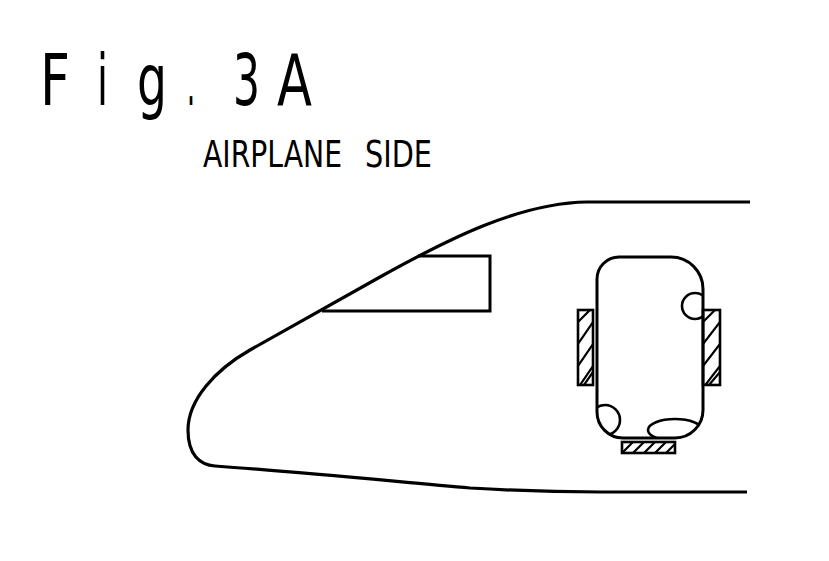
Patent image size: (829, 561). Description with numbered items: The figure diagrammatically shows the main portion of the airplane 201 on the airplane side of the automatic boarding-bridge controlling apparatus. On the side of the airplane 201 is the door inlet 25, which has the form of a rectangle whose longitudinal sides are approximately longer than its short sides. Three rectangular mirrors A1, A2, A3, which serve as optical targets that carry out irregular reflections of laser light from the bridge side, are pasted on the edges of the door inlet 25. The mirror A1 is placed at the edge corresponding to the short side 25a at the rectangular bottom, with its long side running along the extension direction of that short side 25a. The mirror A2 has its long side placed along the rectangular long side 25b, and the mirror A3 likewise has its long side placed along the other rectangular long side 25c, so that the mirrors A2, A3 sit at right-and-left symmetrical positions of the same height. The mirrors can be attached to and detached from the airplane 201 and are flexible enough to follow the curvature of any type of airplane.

The airplane 201 is at (258, 373).
The door inlet 25 is at (605, 440).
The short side 25a is at (698, 422).
The rectangular long side 25b is at (597, 370).
The another rectangular long side 25c is at (703, 292).
The mirror A1 is at (649, 466).
The mirror A2 is at (562, 349).
The mirror A3 is at (735, 349).